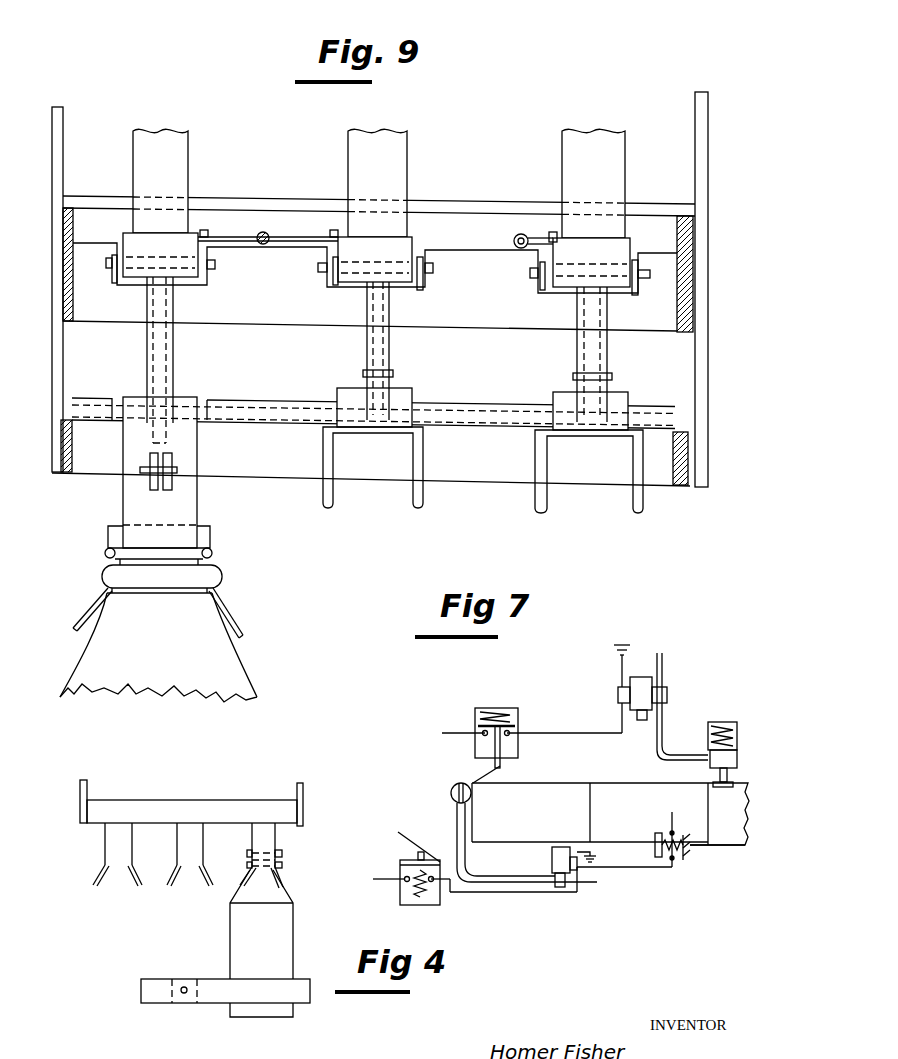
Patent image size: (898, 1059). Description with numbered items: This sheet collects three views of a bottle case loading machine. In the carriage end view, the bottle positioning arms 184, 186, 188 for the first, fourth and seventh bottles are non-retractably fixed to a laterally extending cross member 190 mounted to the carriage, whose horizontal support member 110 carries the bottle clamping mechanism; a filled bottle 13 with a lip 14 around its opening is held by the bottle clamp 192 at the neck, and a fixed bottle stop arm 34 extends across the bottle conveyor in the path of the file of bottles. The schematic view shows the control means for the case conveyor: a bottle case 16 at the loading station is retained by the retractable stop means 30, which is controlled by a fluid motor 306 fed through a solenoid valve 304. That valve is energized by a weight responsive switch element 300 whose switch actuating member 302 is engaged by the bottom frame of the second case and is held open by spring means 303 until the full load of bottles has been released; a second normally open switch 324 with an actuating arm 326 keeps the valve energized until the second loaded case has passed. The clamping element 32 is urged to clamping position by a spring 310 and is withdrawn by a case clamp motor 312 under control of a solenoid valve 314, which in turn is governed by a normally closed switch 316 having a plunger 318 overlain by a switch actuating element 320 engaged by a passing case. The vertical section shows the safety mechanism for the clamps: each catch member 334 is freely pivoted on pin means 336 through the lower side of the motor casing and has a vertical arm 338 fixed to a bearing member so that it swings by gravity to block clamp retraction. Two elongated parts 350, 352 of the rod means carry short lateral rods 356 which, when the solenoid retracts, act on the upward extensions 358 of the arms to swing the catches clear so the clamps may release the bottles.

In FIG. 9, the bottle 13 is at (253, 675).
In FIG. 4, the bottle 13 is at (285, 929).
In FIG. 9, the lip 14 is at (210, 541).
In FIG. 4, the lip 14 is at (282, 858).
In FIG. 7, the bottle case 16 is at (556, 830).
In FIG. 7, the stop means 30 is at (445, 791).
In FIG. 7, the clamping element 32 is at (746, 736).
In FIG. 4, the bottle stop arm 34 is at (218, 997).
In FIG. 4, the horizontal support member 110 is at (297, 797).
In FIG. 4, the bottle positioning arm 184 is at (275, 840).
In FIG. 4, the bottle positioning arm 186 is at (203, 843).
In FIG. 4, the bottle positioning arm 188 is at (132, 843).
In FIG. 4, the cross member 190 is at (210, 806).
In FIG. 9, the bottle clamp 192 is at (83, 612).
In FIG. 4, the bottle clamp 192 is at (242, 884).
In FIG. 7, the weight responsive switch element 300 is at (642, 809).
In FIG. 7, the switch actuating member 302 is at (655, 845).
In FIG. 7, the spring means 303 is at (676, 862).
In FIG. 7, the solenoid valve 304 is at (552, 867).
In FIG. 7, the fluid motor 306 is at (472, 795).
In FIG. 7, the spring 310 is at (708, 723).
In FIG. 7, the case clamp motor 312 is at (706, 761).
In FIG. 7, the solenoid valve 314 is at (651, 684).
In FIG. 7, the switch 316 is at (518, 727).
In FIG. 7, the plunger 318 is at (487, 765).
In FIG. 7, the switch actuating element 320 is at (505, 770).
In FIG. 7, the switch 324 is at (400, 865).
In FIG. 7, the actuating arm 326 is at (421, 851).
In FIG. 9, the catch member 334 is at (367, 364).
In FIG. 9, the pin means 336 is at (107, 264).
In FIG. 9, the vertical arm 338 is at (114, 284).
In FIG. 9, the elongated part 350 is at (268, 228).
In FIG. 9, the elongated part 352 is at (513, 238).
In FIG. 9, the lateral rod 356 is at (318, 228).
In FIG. 9, the upward extension 358 is at (210, 227).